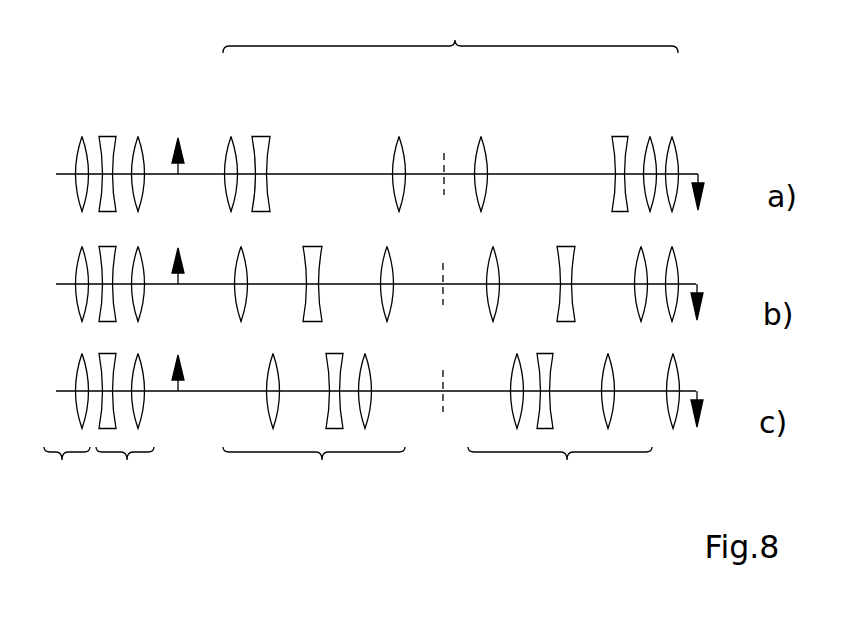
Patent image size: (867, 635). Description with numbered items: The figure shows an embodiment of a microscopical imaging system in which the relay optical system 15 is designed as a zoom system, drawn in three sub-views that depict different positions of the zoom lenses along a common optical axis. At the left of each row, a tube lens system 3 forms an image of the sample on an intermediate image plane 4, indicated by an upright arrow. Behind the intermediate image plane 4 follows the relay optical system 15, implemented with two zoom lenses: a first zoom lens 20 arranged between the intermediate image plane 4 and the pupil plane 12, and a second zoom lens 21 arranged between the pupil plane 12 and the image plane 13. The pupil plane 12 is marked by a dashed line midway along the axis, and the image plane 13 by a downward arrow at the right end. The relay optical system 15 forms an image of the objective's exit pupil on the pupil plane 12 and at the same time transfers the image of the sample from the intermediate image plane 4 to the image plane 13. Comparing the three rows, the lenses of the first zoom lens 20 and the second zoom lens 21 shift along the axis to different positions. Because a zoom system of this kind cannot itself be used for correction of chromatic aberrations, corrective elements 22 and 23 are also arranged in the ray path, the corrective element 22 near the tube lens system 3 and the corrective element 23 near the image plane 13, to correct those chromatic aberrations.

The tube lens system 3 is at (67, 425).
The intermediate image plane 4 is at (167, 140).
The pupil plane 12 is at (443, 151).
The image plane 13 is at (700, 177).
The relay optical system 15 is at (450, 32).
The first zoom lens 20 is at (314, 425).
The second zoom lens 21 is at (560, 425).
The corrective element 22 is at (125, 425).
The corrective element 23 is at (676, 427).